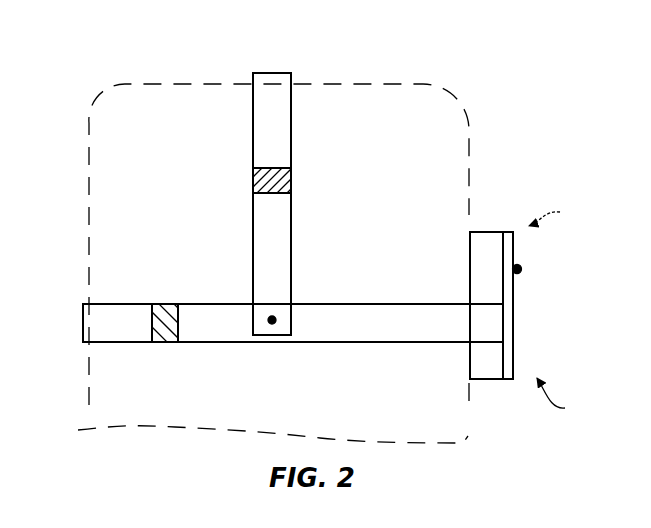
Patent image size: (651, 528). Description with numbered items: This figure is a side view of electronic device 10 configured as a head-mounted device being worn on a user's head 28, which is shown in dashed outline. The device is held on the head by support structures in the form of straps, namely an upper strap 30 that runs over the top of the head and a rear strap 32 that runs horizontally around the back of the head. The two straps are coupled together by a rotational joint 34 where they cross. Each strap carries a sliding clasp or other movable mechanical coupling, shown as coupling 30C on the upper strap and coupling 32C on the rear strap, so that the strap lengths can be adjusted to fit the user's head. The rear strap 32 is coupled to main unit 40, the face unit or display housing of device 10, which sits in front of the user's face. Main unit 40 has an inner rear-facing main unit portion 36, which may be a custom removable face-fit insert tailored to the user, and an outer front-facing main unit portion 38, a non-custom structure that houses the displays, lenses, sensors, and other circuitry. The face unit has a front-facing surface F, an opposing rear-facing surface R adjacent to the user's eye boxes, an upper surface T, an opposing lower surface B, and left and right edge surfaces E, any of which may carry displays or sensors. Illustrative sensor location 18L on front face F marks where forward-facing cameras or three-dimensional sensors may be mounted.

The electronic device 10 is at (562, 397).
The sensor location 18L is at (521, 271).
The user's head 28 is at (405, 83).
The upper strap 30 is at (282, 109).
The coupling 30C is at (291, 182).
The rear strap 32 is at (93, 321).
The coupling 32C is at (158, 304).
The rotational joint 34 is at (271, 325).
The rear-facing main unit portion 36 is at (481, 236).
The front-facing main unit portion 38 is at (510, 320).
The main unit 40 is at (554, 210).
The upper surface T is at (499, 224).
The rear-facing surface R is at (460, 251).
The front-facing surface F is at (530, 250).
The edge surface E is at (493, 368).
The lower surface B is at (486, 390).